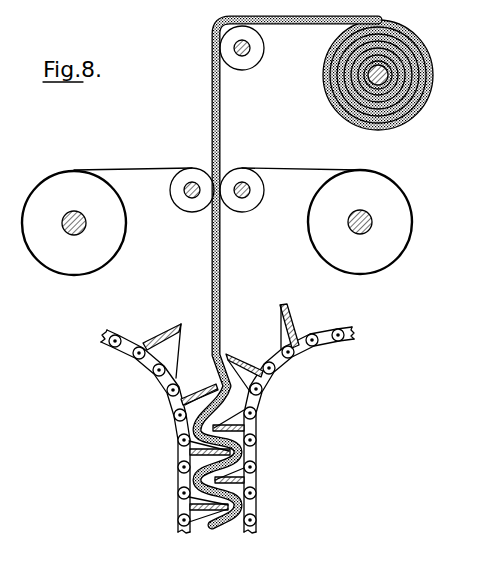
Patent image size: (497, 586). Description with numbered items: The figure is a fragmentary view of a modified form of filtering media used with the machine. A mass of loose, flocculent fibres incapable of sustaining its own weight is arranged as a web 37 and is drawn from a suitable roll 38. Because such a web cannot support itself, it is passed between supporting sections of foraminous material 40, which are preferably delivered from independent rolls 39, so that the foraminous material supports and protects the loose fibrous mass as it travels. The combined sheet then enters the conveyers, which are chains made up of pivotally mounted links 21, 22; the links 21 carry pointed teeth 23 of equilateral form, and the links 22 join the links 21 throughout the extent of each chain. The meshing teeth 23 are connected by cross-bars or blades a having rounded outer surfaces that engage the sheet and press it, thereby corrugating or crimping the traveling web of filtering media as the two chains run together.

The links 21 is at (256, 428).
The links 22 is at (256, 452).
The pointed teeth 23 is at (170, 343).
The mass of loose fibres 37 is at (221, 116).
The roll 38 is at (395, 75).
The rolls 39 is at (118, 223).
The supporting sections of foraminous material 40 is at (217, 119).
The cross-bars or blades a is at (190, 395).